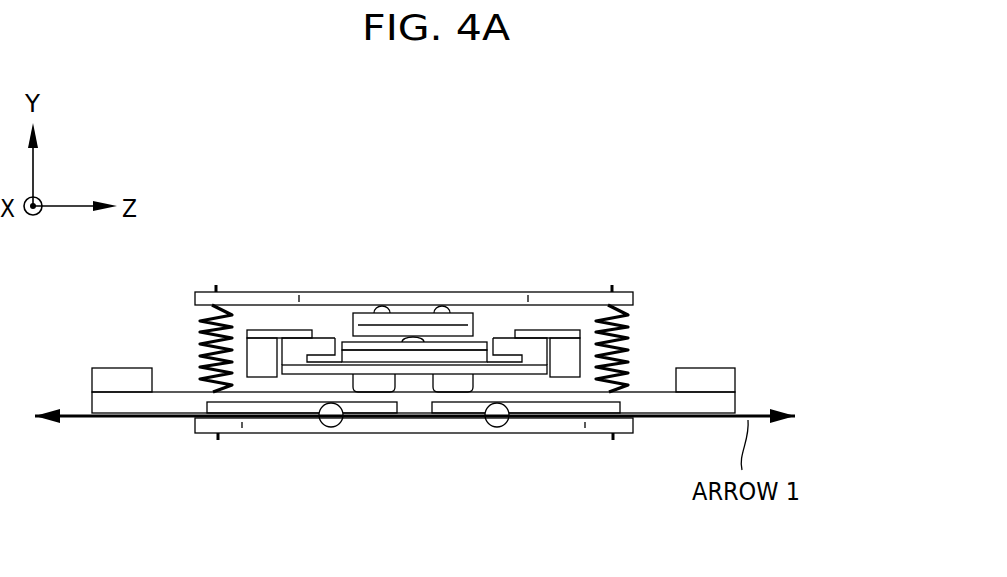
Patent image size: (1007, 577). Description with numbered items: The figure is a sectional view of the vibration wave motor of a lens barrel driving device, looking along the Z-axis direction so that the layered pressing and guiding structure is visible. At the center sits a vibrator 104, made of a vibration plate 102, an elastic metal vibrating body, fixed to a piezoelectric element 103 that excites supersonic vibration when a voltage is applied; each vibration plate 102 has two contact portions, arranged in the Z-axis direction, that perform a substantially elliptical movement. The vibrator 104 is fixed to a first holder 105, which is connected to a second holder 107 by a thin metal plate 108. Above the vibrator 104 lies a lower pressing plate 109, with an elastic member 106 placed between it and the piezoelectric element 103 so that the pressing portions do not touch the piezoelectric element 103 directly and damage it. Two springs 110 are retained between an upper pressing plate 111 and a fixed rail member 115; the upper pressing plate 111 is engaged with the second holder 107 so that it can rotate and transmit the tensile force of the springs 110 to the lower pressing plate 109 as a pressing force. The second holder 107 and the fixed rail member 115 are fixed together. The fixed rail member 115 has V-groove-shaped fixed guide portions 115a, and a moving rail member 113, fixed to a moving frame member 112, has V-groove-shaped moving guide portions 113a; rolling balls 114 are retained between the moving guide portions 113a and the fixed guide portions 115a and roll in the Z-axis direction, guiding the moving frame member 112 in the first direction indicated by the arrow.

The vibration plate 102 is at (458, 368).
The piezoelectric element 103 is at (418, 358).
The vibrator 104 is at (513, 233).
The first holder 105 is at (510, 343).
The elastic member 106 is at (347, 342).
The second holder 107 is at (570, 343).
The thin metal plate 108 is at (557, 333).
The lower pressing plate 109 is at (380, 318).
The spring 110 is at (204, 335).
The upper pressing plate 111 is at (252, 298).
The moving frame member 112 is at (700, 373).
The moving rail member 113 is at (647, 402).
The moving guide portion 113a is at (293, 405).
The rolling ball 114 is at (497, 428).
The fixed rail member 115 is at (623, 425).
The fixed guide portion 115a is at (552, 425).